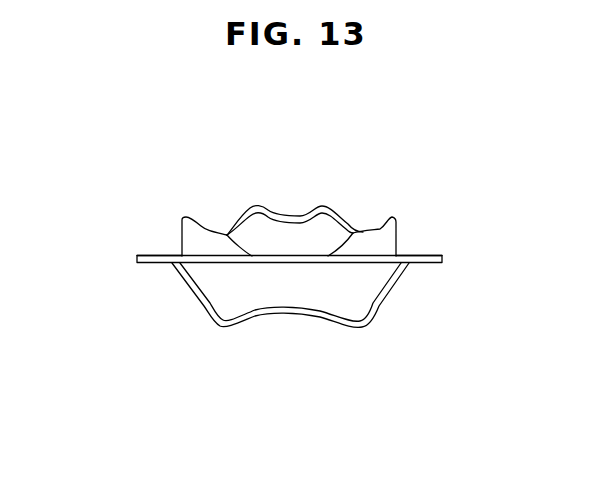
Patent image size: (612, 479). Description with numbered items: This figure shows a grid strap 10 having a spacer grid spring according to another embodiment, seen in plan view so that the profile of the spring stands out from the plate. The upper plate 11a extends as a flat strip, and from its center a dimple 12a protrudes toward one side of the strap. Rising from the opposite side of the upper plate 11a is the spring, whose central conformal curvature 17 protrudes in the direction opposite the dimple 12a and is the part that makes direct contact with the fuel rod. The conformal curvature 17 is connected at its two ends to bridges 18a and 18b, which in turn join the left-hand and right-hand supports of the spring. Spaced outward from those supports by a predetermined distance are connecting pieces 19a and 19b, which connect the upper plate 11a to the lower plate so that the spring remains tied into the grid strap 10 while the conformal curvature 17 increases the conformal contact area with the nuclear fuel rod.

The grid strap 10 is at (508, 222).
The upper plate 11a is at (137, 257).
The dimple 12a is at (289, 318).
The conformal curvature 17 is at (291, 211).
The bridge 18a is at (211, 230).
The bridge 18b is at (377, 228).
The connecting piece 19a is at (158, 255).
The connecting piece 19b is at (424, 255).